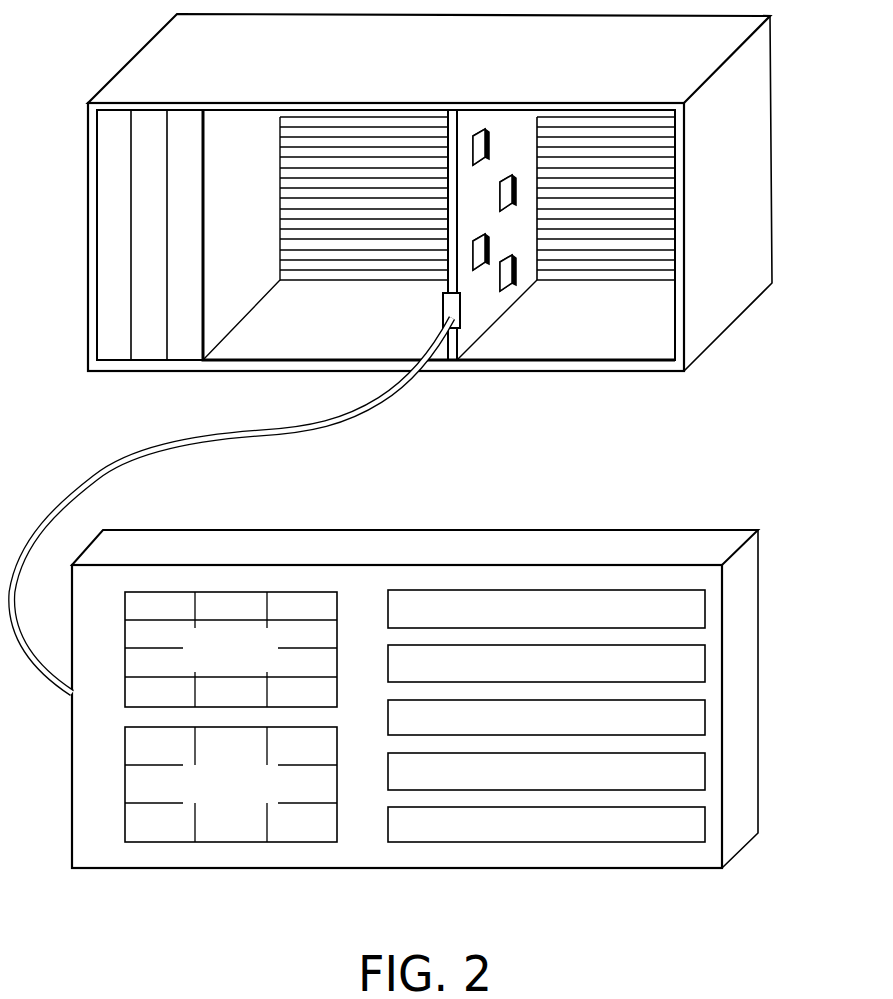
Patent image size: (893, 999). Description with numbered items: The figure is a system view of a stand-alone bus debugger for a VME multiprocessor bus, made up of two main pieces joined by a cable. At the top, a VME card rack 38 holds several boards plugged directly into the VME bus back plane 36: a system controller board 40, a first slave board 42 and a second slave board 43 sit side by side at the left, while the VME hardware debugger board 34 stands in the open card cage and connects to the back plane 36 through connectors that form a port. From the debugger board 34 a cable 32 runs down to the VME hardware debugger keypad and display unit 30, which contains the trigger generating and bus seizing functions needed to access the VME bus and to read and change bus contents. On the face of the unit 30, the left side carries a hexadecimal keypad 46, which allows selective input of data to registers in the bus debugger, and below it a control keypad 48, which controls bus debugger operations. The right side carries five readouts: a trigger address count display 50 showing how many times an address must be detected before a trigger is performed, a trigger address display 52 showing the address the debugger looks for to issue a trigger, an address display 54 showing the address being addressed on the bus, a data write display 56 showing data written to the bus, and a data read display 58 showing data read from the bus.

The VME hardware debugger keypad and display unit 30 is at (445, 540).
The cable 32 is at (68, 487).
The VME hardware debugger board 34 is at (487, 302).
The VME bus back plane 36 is at (296, 213).
The VME card rack 38 is at (718, 337).
The system controller board 40 is at (117, 355).
The slave board 42 is at (147, 352).
The slave board 43 is at (185, 350).
The hexadecimal keypad 46 is at (125, 633).
The control keypad 48 is at (125, 773).
The trigger address count display 50 is at (705, 615).
The trigger address display 52 is at (705, 665).
The address display 54 is at (705, 723).
The data write display 56 is at (705, 777).
The data read display 58 is at (705, 832).